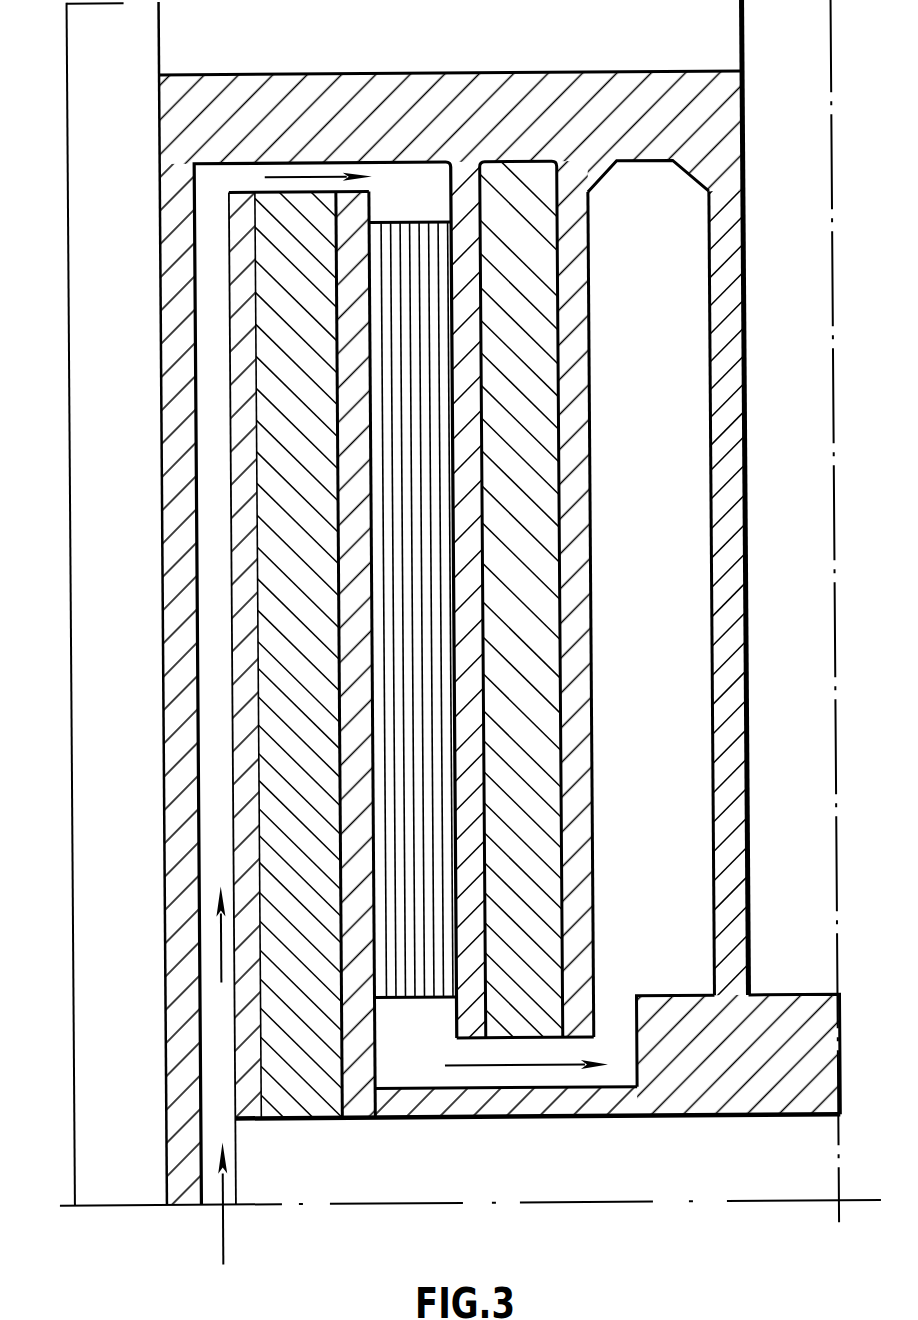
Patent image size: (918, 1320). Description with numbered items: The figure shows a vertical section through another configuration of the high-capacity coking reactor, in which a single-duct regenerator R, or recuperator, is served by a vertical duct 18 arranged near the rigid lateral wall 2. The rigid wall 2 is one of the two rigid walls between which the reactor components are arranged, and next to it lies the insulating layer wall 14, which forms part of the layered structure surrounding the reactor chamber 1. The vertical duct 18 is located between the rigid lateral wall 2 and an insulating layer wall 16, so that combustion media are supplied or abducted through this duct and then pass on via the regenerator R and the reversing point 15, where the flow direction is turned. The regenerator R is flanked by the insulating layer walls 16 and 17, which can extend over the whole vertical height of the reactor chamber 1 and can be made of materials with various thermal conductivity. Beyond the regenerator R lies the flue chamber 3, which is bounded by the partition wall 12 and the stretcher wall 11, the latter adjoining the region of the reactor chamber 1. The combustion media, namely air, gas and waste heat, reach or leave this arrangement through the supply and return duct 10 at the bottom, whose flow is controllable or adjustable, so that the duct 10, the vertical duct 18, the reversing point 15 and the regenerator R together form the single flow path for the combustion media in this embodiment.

The reactor chamber 1 is at (802, 604).
The rigid wall 2 is at (135, 539).
The flue chamber 3 is at (676, 607).
The supply- and return duct 10 is at (219, 1237).
The stretcher wall 11 is at (748, 453).
The partition wall 12 is at (593, 457).
The insulating layer wall 14 is at (177, 456).
The reversing point 15 is at (508, 1077).
The insulating layer wall 16 is at (297, 589).
The insulating layer wall 17 is at (517, 696).
The vertical duct 18 is at (206, 740).
The regenerator R is at (407, 583).